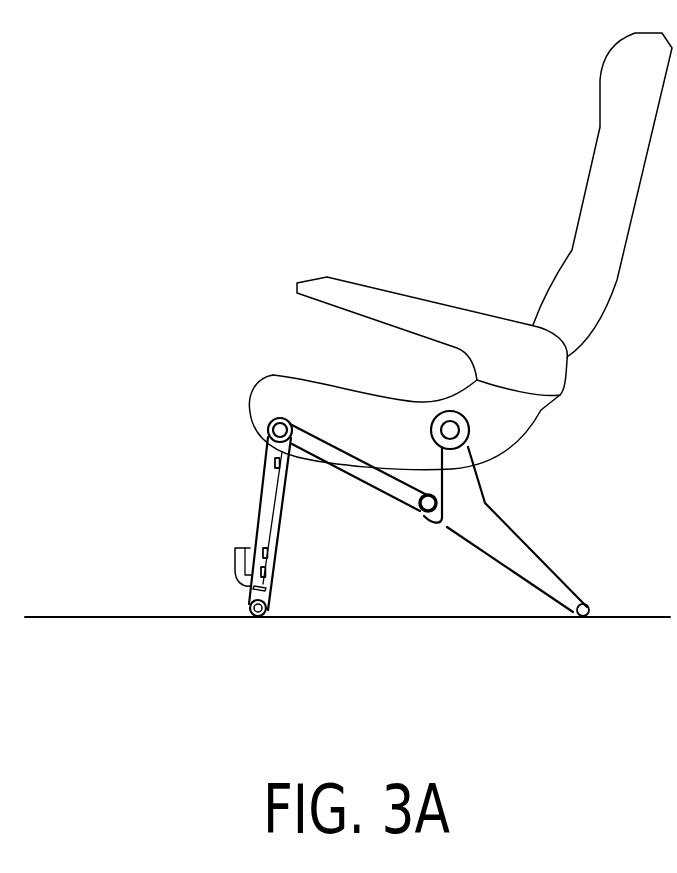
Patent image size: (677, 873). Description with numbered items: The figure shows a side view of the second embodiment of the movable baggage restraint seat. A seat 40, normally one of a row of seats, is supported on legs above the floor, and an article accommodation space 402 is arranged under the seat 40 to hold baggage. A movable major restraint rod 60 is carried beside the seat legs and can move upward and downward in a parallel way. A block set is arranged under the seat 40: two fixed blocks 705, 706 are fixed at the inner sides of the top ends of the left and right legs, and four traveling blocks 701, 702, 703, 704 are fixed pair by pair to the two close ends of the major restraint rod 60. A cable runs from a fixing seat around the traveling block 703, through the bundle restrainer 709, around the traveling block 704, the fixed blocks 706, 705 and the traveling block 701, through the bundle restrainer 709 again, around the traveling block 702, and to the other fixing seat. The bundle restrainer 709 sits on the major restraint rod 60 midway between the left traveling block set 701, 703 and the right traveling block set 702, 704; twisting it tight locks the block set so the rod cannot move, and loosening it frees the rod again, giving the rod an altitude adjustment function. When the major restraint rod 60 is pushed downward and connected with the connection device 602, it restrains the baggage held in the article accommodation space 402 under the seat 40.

The seat 40 is at (262, 398).
The article accommodation space 402 is at (482, 600).
The major restraint rod 60 is at (253, 550).
The connection device 602 is at (233, 563).
The bundle restrainer 709 is at (272, 493).
The fixed block 705 is at (290, 464).
The fixed block 706 is at (321, 500).
The traveling block 701 is at (277, 552).
The traveling block 704 is at (343, 562).
The traveling block 703 is at (272, 582).
The traveling block 702 is at (341, 587).